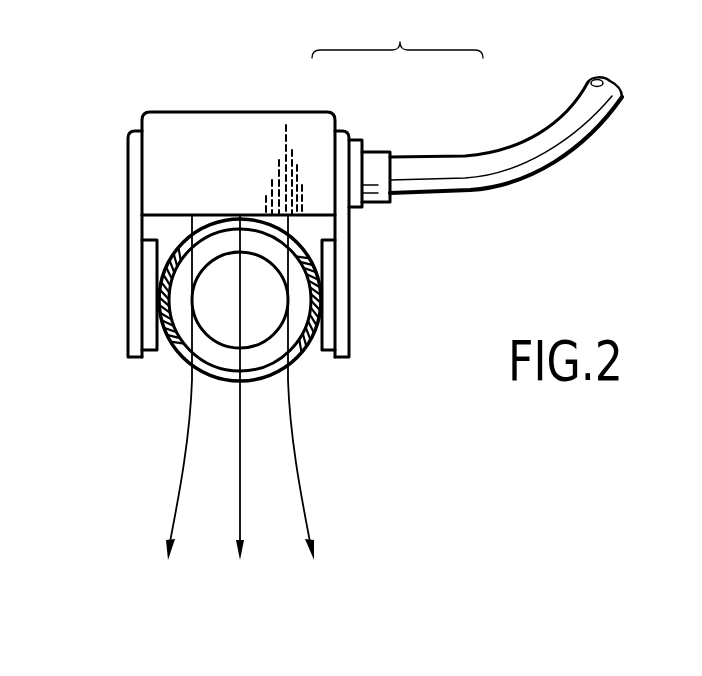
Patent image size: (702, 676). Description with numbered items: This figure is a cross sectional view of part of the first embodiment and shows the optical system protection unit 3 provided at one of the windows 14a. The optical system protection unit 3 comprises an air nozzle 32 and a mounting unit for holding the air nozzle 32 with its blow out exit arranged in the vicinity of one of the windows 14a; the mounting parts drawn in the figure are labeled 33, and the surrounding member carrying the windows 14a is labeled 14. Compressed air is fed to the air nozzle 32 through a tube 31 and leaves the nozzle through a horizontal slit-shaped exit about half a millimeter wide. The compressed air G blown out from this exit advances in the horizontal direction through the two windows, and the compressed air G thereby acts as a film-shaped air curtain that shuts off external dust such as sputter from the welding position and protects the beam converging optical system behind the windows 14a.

The optical system protection unit 3 is at (440, 50).
The tube 31 is at (490, 163).
The air nozzle 32 is at (297, 127).
The holder 33 is at (355, 272).
The nozzle ring 14 is at (300, 347).
The windows 14a is at (185, 258).
The compressed air G is at (297, 460).